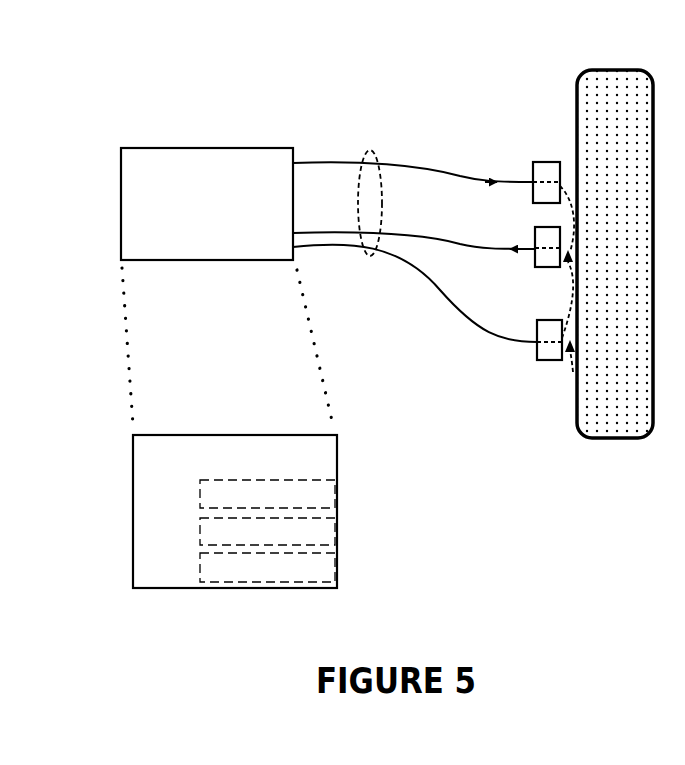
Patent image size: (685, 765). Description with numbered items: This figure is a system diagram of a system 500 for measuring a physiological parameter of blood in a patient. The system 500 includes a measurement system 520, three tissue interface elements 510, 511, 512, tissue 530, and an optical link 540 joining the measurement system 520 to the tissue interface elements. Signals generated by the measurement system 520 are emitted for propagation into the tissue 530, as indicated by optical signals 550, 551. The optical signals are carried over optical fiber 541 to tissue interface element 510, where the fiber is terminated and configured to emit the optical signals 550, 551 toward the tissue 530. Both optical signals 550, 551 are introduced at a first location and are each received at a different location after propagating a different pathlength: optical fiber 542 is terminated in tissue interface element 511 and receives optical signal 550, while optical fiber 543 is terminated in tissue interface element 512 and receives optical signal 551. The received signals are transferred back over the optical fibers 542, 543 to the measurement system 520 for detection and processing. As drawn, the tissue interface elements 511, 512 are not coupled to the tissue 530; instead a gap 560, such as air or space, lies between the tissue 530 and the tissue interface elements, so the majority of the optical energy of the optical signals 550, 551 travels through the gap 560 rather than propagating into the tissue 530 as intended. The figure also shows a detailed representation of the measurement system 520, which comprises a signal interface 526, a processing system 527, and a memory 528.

The system 500 is at (164, 92).
The tissue interface element 510 is at (538, 162).
The tissue interface element 511 is at (540, 267).
The tissue interface element 512 is at (539, 358).
The measurement system 520 is at (229, 368).
The signal interface 526 is at (200, 493).
The processing system 527 is at (200, 530).
The memory 528 is at (200, 567).
The tissue 530 is at (595, 440).
The optical link 540 is at (373, 153).
The optical fiber 541 is at (310, 163).
The optical fiber 542 is at (308, 242).
The optical fiber 543 is at (430, 268).
The optical signal 550 is at (566, 265).
The optical signal 551 is at (570, 355).
The gap 560 is at (568, 160).